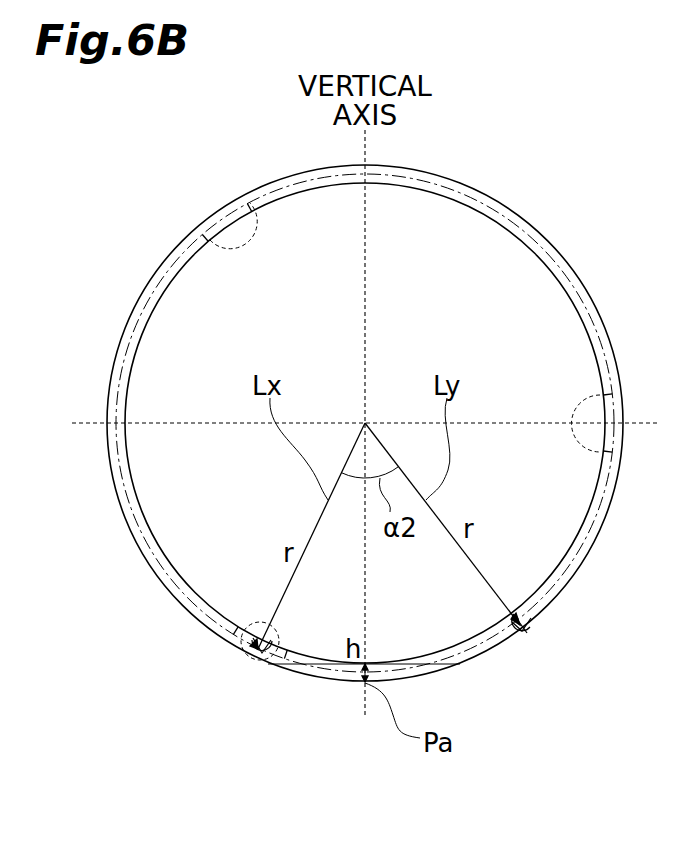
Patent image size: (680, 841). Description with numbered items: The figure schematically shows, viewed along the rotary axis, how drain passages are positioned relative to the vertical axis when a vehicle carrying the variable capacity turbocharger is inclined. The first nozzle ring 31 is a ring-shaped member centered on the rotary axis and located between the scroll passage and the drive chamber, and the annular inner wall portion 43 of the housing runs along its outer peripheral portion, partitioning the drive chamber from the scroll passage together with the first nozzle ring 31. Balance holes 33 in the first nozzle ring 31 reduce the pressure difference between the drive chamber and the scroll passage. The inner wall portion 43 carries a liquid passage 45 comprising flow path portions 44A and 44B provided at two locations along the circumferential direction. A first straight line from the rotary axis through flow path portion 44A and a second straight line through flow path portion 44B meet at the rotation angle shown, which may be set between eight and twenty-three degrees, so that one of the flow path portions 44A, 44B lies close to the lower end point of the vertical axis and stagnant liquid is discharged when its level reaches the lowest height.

The first nozzle ring 31 is at (553, 247).
The inner wall portion 43 is at (600, 316).
The balance hole 33 is at (233, 247).
The flow path portion 44A is at (243, 648).
The flow path portion 44B is at (533, 631).
The liquid passage 45 is at (528, 632).